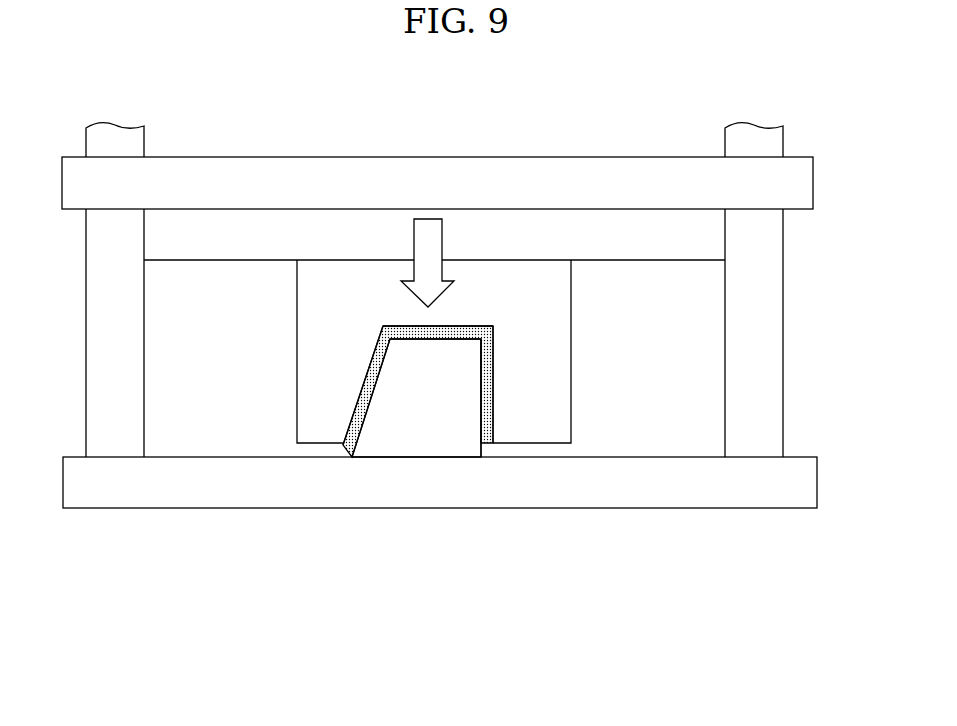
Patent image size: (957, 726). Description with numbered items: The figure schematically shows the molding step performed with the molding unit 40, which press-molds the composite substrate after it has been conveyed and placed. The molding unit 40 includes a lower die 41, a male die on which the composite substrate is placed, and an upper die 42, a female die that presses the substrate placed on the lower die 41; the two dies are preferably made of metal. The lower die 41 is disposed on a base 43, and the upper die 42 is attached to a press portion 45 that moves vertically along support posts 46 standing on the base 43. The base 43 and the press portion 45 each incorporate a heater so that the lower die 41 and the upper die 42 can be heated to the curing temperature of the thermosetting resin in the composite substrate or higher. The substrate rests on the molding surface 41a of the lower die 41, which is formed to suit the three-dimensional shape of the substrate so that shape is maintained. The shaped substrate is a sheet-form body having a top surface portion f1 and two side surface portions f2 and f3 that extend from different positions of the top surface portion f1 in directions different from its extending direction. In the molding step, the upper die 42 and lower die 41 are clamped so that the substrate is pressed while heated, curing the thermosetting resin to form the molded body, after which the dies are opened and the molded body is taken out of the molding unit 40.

The molding unit 40 is at (464, 315).
The lower die 41 is at (412, 450).
The molding surface 41a is at (483, 405).
The upper die 42 is at (562, 343).
The base 43 is at (620, 495).
The press portion 45 is at (798, 188).
The support posts 46 is at (133, 427).
The top surface portion f1 is at (472, 327).
The side surface portion f2 is at (353, 425).
The side surface portion f3 is at (488, 360).